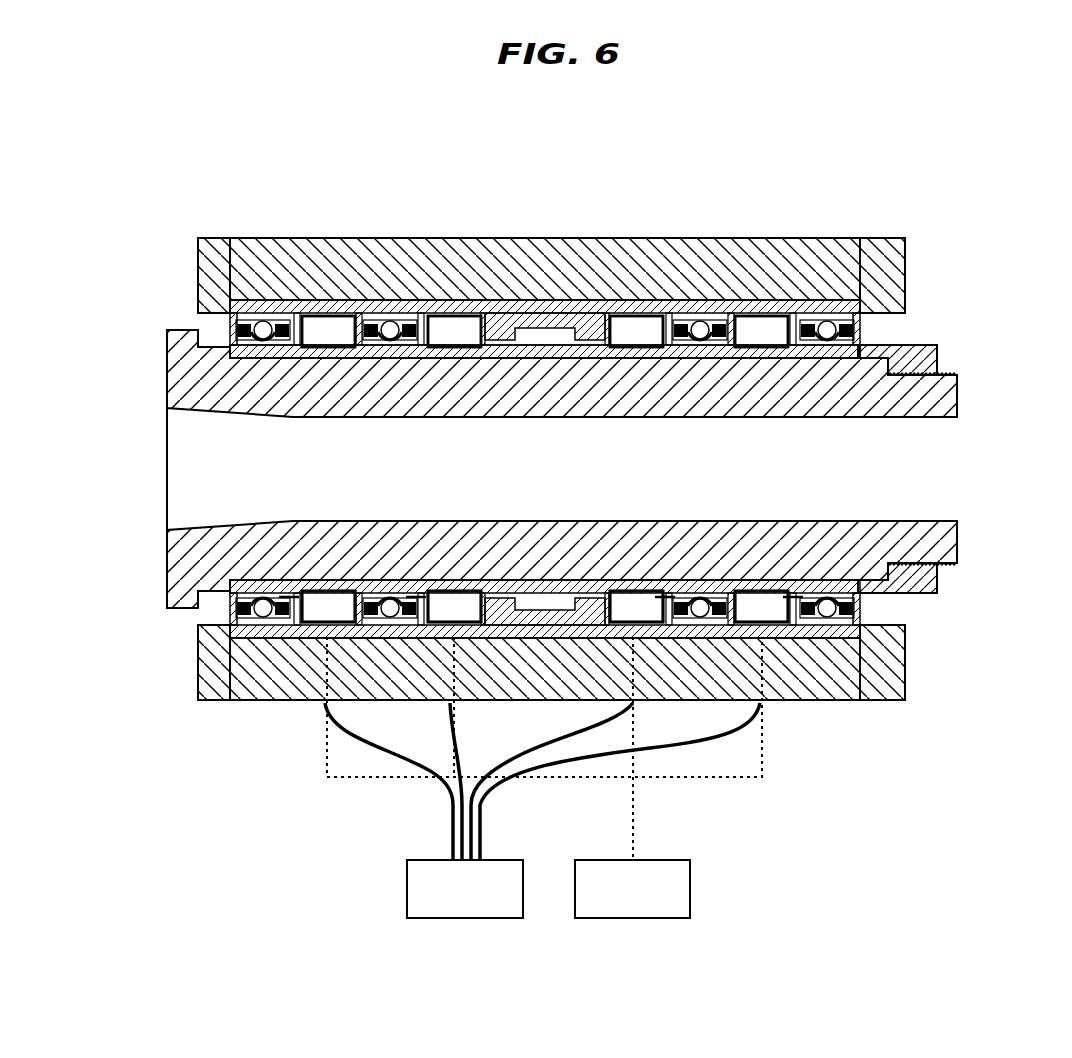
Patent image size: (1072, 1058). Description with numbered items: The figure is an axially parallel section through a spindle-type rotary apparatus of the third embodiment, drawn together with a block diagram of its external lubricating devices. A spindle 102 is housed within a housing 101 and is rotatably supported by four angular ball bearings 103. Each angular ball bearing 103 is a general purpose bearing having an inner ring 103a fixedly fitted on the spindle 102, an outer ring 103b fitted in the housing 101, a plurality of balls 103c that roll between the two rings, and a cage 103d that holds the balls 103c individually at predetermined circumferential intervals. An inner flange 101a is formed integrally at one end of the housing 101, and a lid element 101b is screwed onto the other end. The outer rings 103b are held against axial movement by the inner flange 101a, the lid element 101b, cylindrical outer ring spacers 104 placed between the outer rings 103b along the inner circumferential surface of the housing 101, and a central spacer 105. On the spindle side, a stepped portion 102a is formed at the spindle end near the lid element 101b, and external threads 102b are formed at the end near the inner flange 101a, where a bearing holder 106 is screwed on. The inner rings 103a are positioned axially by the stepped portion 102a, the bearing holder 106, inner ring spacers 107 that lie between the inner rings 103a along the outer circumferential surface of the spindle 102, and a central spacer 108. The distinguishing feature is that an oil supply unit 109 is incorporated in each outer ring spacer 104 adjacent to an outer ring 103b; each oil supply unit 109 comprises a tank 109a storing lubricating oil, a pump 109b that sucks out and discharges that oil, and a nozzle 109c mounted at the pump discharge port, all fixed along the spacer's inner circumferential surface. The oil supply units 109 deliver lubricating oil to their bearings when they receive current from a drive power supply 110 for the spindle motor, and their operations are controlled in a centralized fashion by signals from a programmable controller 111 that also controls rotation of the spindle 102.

The housing 101 is at (612, 250).
The inner flange 101a is at (890, 298).
The lid element 101b is at (197, 262).
The spindle 102 is at (905, 522).
The stepped portion 102a is at (213, 352).
The external threads 102b is at (937, 377).
The angular ball bearing 103 is at (243, 297).
The inner ring 103a is at (243, 357).
The outer ring 103b is at (262, 318).
The ball 103c is at (280, 320).
The cage 103d is at (232, 330).
The outer ring spacer 104 is at (320, 332).
The central spacer 105 is at (540, 312).
The bearing holder 106 is at (920, 345).
The inner ring spacer 107 is at (297, 358).
The central spacer 108 is at (540, 358).
The oil supply unit 109 is at (325, 636).
The tank 109a is at (318, 340).
The pump 109b is at (328, 605).
The nozzle 109c is at (285, 597).
The drive power supply 110 is at (407, 888).
The programmable controller 111 is at (690, 888).